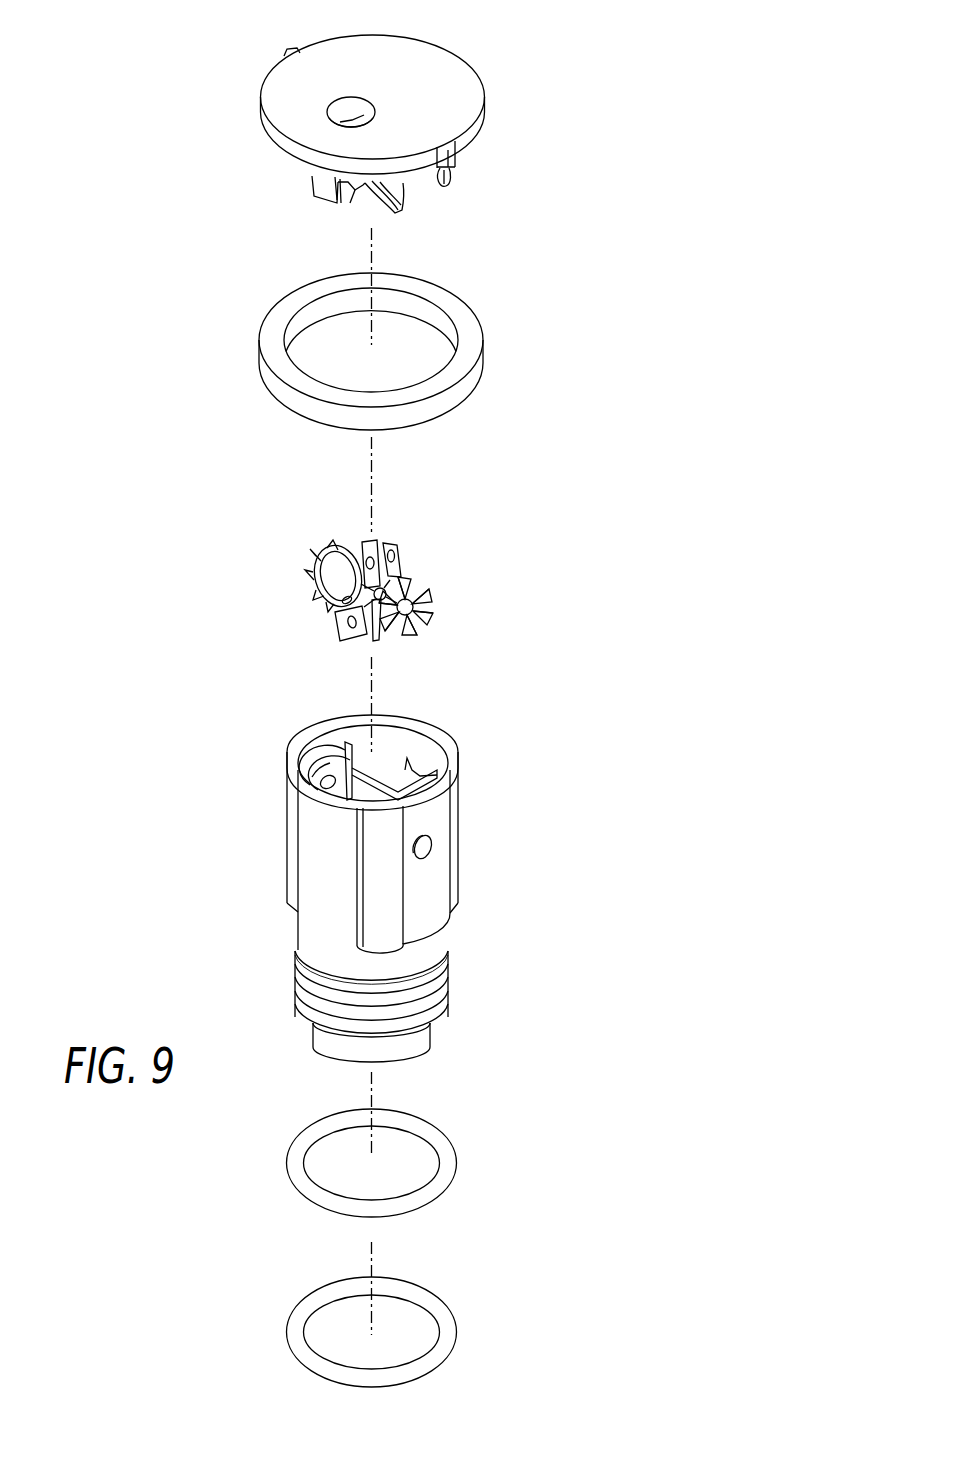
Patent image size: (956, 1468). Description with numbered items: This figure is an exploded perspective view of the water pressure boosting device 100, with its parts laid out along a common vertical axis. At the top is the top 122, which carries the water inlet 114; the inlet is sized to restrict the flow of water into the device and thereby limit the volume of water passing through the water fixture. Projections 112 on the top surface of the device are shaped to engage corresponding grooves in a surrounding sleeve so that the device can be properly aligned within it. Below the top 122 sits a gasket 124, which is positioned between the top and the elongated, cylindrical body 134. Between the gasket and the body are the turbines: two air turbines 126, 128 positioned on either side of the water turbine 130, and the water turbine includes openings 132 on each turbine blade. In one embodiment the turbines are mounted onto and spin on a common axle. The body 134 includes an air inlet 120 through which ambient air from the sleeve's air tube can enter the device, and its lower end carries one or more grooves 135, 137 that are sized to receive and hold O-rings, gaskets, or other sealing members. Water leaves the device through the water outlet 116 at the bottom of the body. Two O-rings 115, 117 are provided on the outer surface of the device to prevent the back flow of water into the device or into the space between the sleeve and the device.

The water pressure boosting device 100 is at (560, 84).
The projections 112 is at (291, 53).
The water inlet 114 is at (343, 114).
The O-ring 115 is at (449, 1150).
The water outlet 116 is at (413, 1045).
The O-ring 117 is at (449, 1318).
The air inlet 120 is at (435, 844).
The top 122 is at (452, 123).
The gasket 124 is at (481, 357).
The air turbine 126 is at (411, 559).
The air turbine 128 is at (452, 604).
The water turbine 130 is at (396, 570).
The openings 132 is at (388, 560).
The body 134 is at (438, 876).
The groove 135 is at (403, 984).
The groove 137 is at (413, 1012).